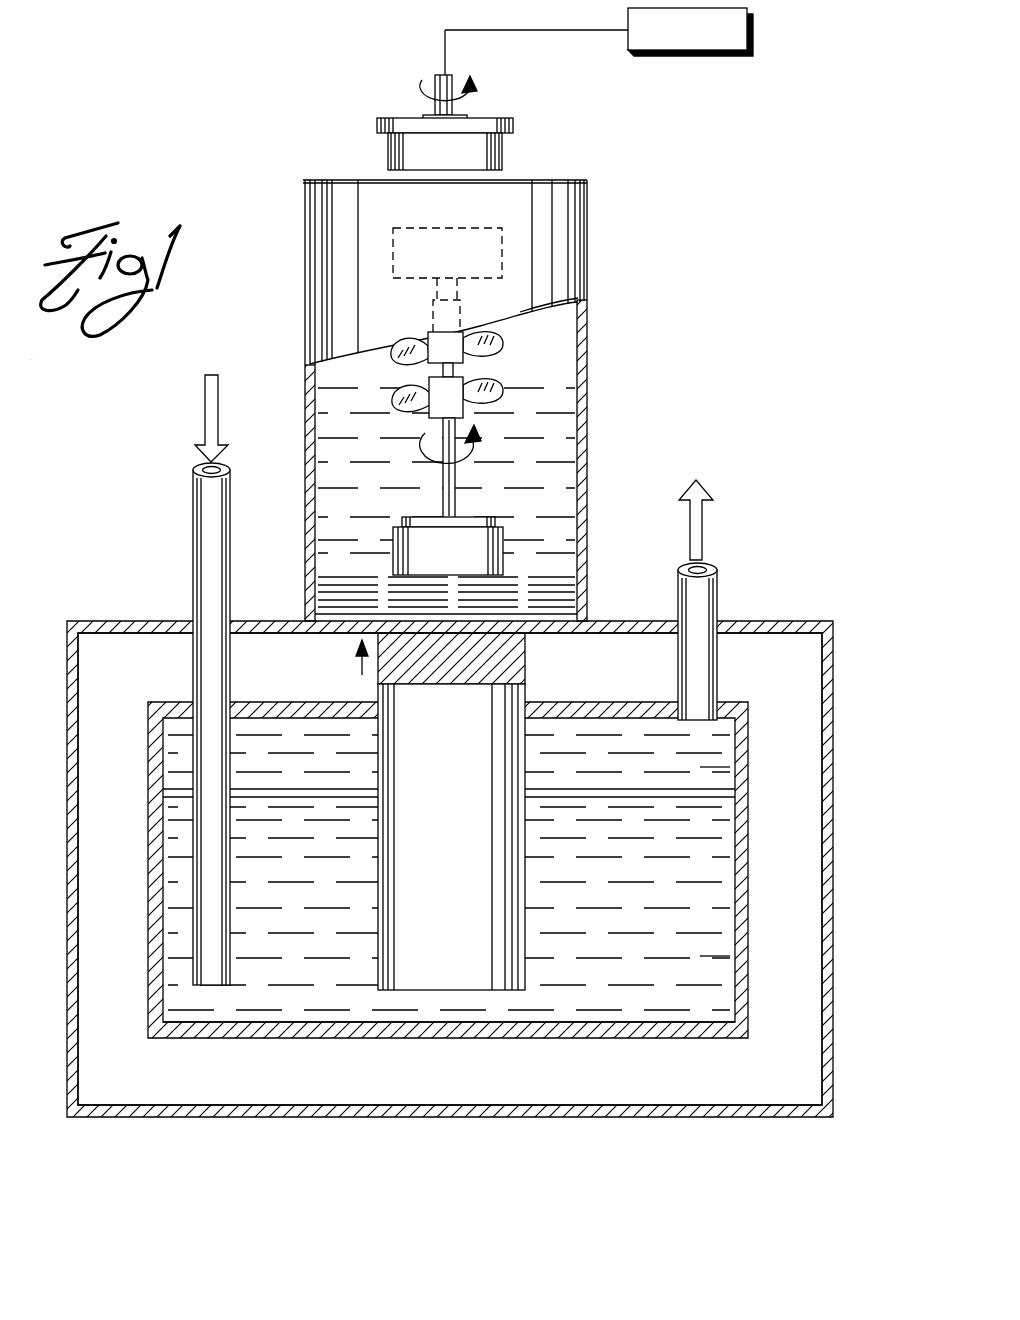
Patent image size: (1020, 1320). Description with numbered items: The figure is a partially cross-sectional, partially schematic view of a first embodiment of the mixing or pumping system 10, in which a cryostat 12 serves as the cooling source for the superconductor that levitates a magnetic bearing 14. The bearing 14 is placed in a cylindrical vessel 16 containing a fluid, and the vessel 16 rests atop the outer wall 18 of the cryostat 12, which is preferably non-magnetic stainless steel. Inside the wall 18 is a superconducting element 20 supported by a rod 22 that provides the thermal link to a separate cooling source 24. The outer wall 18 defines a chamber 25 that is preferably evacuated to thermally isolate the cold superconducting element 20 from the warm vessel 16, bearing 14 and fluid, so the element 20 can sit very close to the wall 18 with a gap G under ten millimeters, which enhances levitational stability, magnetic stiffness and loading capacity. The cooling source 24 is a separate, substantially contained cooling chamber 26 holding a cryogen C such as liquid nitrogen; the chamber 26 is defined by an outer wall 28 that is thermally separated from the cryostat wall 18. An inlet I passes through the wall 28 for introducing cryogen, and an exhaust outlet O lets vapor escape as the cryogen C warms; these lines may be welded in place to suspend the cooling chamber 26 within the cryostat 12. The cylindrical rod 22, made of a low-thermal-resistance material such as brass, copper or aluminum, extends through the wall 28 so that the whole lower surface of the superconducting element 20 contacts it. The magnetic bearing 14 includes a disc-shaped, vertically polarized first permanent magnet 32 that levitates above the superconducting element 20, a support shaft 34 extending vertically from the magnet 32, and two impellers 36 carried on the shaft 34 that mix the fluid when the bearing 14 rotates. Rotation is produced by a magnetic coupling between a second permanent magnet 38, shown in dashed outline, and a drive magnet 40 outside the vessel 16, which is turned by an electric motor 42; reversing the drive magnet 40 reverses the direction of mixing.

The mixing or pumping system 10 is at (236, 138).
The cryostat 12 is at (790, 590).
The magnetic bearing 14 is at (559, 352).
The vessel 16 is at (588, 278).
The outer wall 18 is at (826, 668).
The superconducting element 20 is at (526, 663).
The rod 22 is at (464, 965).
The cooling source 24 is at (518, 872).
The chamber 25 is at (112, 665).
The cooling chamber 26 is at (750, 856).
The outer wall 28 is at (680, 1032).
The first permanent magnet 32 is at (503, 556).
The support shaft 34 is at (445, 470).
The impellers 36 is at (502, 388).
The second permanent magnet 38 is at (490, 245).
The drive magnet 40 is at (492, 152).
The electric motor 42 is at (735, 56).
The inlet I is at (210, 538).
The exhaust outlet O is at (708, 595).
The gap G is at (360, 642).
The product liquid P is at (712, 767).
The cryogen C is at (712, 956).